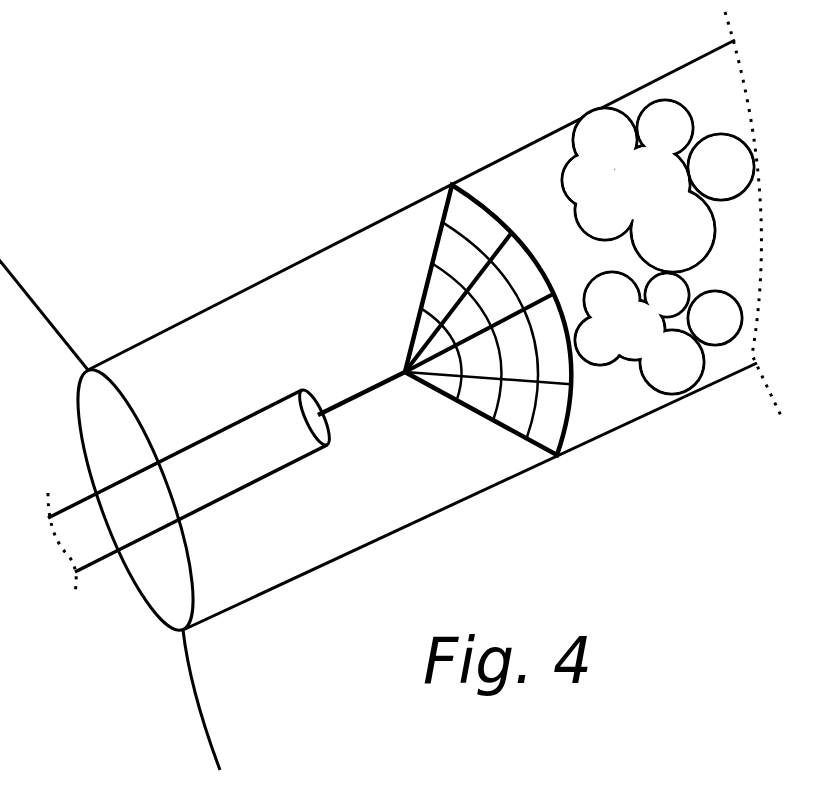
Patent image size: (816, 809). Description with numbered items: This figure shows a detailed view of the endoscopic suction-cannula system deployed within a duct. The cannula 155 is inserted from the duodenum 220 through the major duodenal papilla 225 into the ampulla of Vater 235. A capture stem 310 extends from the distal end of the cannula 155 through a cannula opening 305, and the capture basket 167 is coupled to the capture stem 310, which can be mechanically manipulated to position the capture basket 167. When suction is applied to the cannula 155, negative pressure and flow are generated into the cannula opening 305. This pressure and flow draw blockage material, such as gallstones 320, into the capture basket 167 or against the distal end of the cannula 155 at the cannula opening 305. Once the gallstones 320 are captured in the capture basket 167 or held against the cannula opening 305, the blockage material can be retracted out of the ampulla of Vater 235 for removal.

The cannula 155 is at (263, 408).
The capture basket 167 is at (487, 213).
The duodenum 220 is at (8, 272).
The major duodenal papilla 225 is at (188, 578).
The ampulla of Vater 235 is at (333, 245).
The cannula opening 305 is at (321, 428).
The capture stem 310 is at (367, 389).
The gallstones 320 is at (658, 247).